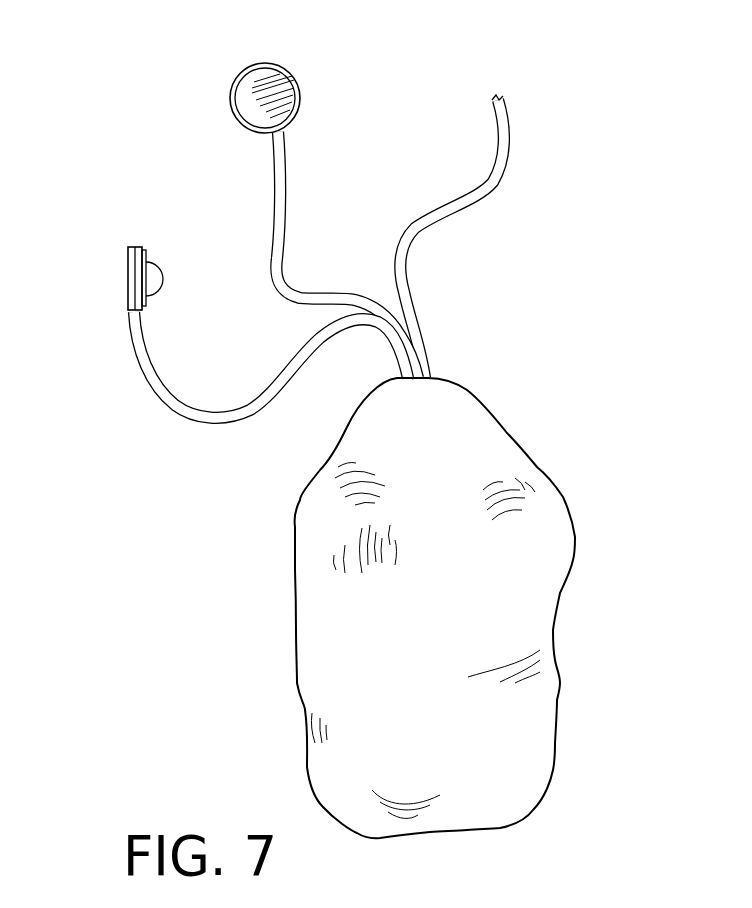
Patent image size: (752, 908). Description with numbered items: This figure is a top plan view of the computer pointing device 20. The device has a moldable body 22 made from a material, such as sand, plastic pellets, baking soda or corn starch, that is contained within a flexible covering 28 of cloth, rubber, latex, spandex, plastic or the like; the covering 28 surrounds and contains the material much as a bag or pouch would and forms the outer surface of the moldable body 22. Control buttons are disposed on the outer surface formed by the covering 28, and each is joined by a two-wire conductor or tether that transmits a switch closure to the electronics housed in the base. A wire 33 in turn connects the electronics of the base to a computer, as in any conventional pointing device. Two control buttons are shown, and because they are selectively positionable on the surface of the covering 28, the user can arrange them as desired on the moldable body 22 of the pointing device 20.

The computer pointing device 20 is at (497, 575).
The moldable body 22 is at (553, 752).
The flexible covering 28 is at (497, 608).
The wire 33 is at (493, 160).